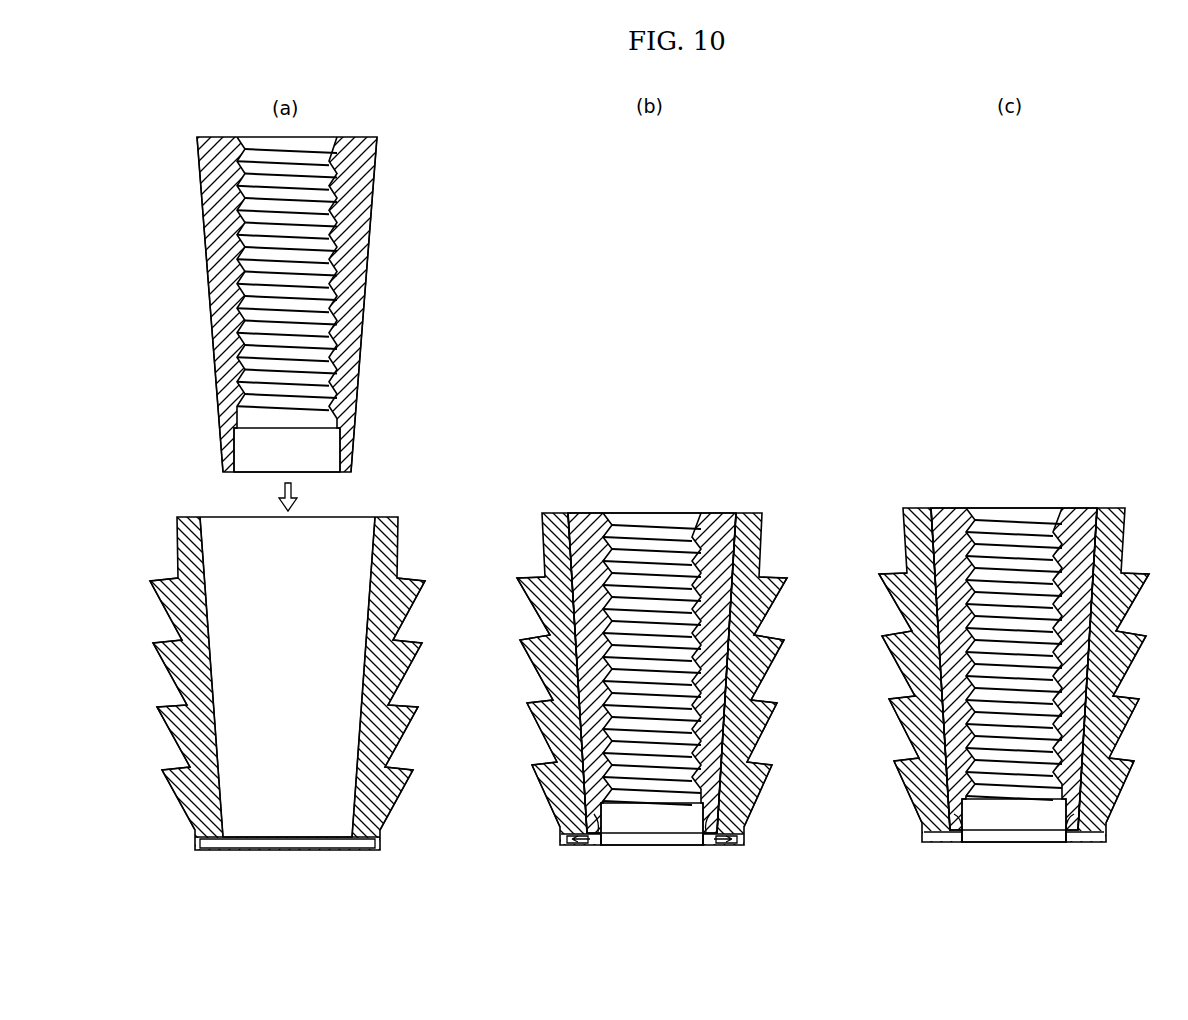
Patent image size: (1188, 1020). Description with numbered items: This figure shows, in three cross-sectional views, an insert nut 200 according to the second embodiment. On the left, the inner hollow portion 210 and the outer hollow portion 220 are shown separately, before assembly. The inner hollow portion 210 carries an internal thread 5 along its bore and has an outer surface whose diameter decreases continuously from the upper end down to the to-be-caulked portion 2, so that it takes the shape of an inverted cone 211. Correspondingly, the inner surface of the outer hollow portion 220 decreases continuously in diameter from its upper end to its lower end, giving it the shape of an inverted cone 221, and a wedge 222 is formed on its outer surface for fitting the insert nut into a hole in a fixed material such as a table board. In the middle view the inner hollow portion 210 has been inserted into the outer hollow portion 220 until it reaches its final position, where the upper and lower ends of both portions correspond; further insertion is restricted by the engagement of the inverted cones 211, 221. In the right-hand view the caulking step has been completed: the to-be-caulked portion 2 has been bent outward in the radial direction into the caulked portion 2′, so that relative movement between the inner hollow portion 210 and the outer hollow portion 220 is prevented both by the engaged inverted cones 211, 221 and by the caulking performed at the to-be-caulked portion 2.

The insert nut 200 is at (668, 433).
The inner hollow portion 210 is at (382, 199).
The inverted cone 211 is at (371, 268).
The internal thread 5 is at (320, 296).
The to-be-caulked portion 2 is at (232, 462).
The deformed bottom end portion 2′ is at (620, 848).
The outer hollow portion 220 is at (402, 549).
The inverted cone 221 is at (365, 598).
The wedge 222 is at (176, 655).